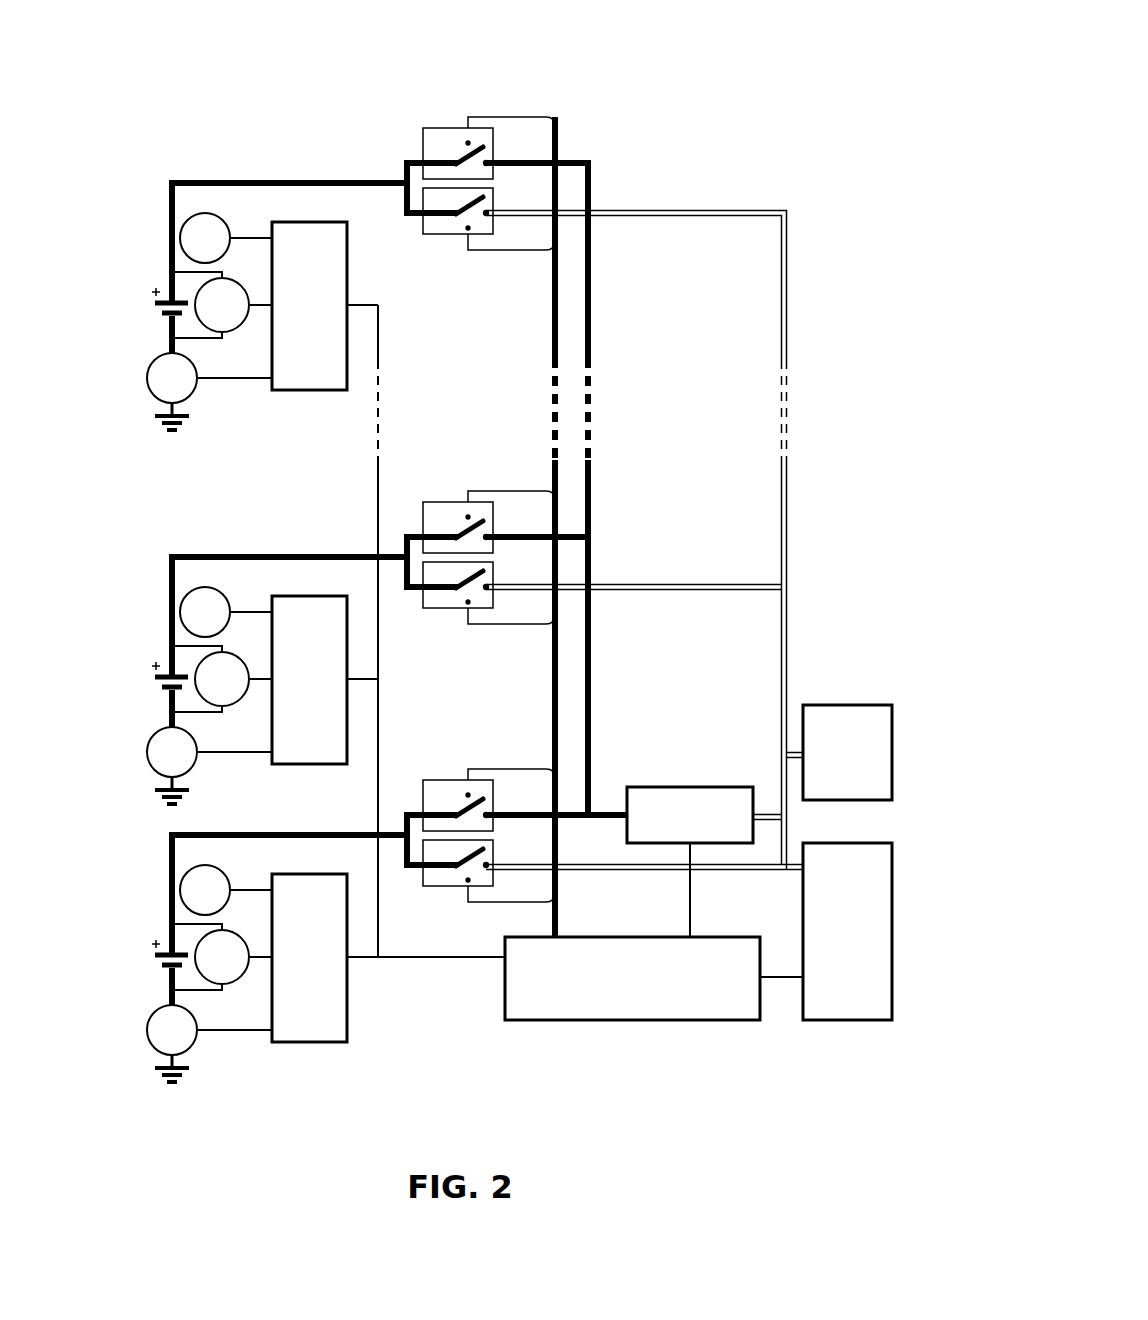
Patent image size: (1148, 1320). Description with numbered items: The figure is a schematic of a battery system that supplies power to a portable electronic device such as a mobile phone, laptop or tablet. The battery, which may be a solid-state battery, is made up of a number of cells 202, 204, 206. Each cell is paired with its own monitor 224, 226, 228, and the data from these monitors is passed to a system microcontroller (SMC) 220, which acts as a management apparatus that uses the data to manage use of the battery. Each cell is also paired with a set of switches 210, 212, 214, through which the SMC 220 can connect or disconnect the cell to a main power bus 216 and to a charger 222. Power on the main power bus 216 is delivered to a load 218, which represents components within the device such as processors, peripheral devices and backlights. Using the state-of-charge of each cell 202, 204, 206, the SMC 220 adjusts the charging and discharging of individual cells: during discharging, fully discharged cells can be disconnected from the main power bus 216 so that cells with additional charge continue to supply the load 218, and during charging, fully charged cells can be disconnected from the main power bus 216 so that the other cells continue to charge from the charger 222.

The cell 202 is at (253, 958).
The cell 204 is at (253, 680).
The cell 206 is at (253, 306).
The switches 210 is at (421, 138).
The switches 212 is at (422, 518).
The switches 214 is at (422, 796).
The main power bus 216 is at (735, 209).
The load 218 is at (828, 752).
The system microcontroller (SMC) 220 is at (612, 979).
The charger 222 is at (802, 1018).
The monitor 224 is at (293, 1012).
The monitor 226 is at (287, 738).
The monitor 228 is at (290, 367).